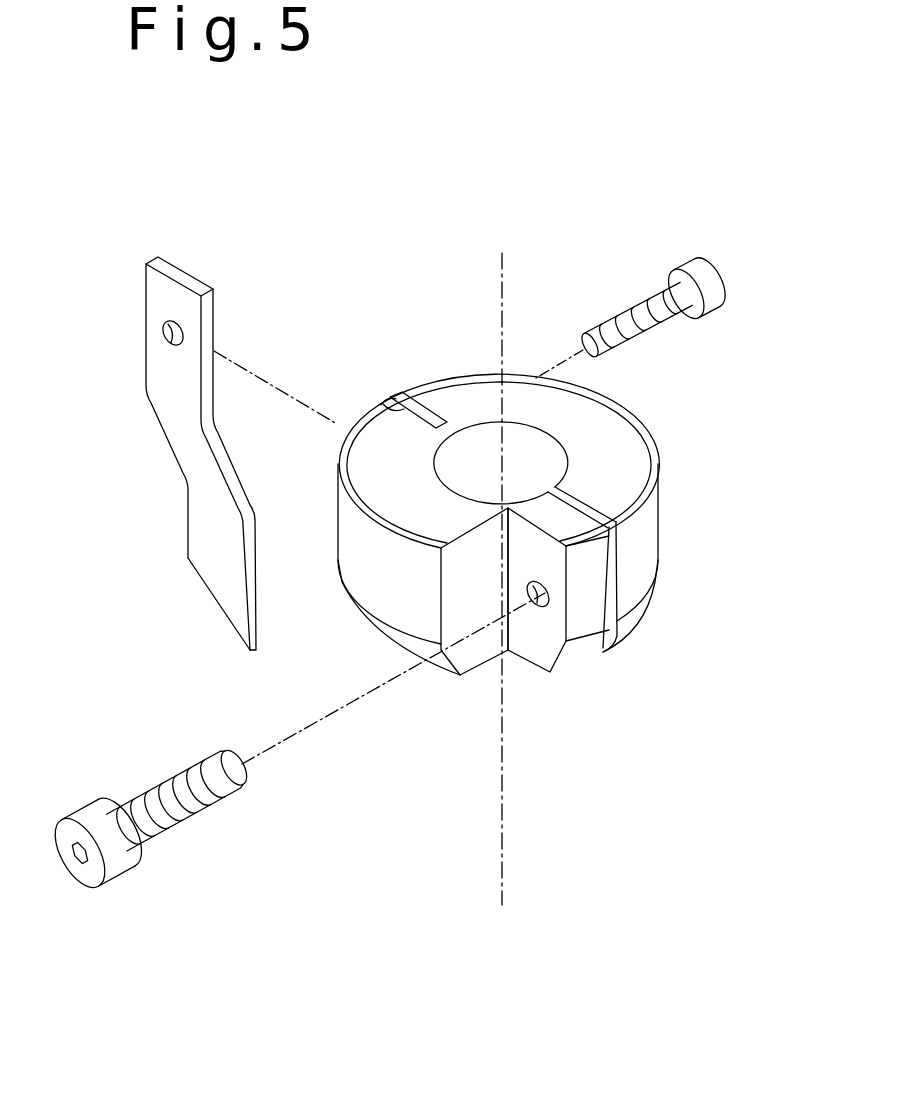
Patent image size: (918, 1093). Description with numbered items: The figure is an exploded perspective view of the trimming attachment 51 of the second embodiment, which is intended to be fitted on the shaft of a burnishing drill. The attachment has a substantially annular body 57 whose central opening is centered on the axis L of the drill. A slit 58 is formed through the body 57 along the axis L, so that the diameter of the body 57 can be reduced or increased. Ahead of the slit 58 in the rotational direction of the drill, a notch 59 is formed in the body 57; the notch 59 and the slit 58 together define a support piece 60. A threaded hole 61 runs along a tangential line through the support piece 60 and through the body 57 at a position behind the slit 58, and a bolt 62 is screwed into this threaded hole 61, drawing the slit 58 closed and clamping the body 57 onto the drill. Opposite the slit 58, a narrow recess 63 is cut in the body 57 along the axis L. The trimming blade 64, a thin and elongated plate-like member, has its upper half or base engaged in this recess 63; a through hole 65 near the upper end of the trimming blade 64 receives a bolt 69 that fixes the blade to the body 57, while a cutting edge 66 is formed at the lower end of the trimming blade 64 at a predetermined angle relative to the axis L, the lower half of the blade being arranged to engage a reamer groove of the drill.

The trimming attachment 51 is at (469, 370).
The body 57 is at (645, 533).
The slit 58 is at (610, 592).
The notch 59 is at (480, 660).
The support piece 60 is at (578, 653).
The threaded hole 61 is at (540, 608).
The bolt 62 is at (157, 838).
The recess 63 is at (392, 405).
The trimming blade 64 is at (175, 290).
The through hole 65 is at (163, 336).
The cutting edge 66 is at (249, 655).
The bolt 69 is at (655, 325).
The axis L is at (505, 273).